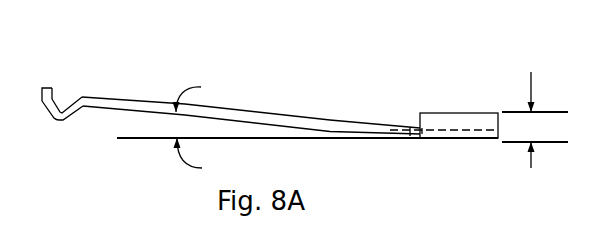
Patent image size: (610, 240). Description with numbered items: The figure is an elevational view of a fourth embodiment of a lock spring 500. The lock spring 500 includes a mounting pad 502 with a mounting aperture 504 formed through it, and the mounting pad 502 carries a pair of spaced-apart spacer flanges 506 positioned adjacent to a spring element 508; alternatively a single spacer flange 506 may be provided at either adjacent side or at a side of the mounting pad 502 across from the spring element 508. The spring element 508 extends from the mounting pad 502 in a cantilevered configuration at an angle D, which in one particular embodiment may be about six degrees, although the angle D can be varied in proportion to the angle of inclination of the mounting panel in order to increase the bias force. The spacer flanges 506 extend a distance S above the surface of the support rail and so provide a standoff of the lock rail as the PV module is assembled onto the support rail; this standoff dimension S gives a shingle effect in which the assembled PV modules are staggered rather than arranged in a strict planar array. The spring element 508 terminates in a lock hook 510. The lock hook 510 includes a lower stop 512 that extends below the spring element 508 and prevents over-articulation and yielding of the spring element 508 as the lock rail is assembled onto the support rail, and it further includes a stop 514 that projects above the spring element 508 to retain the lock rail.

The lock spring 500 is at (358, 80).
The mounting pad 502 is at (422, 132).
The mounting aperture 504 is at (432, 130).
The spacer flange 506 is at (463, 119).
The spring element 508 is at (250, 121).
The lock hook 510 is at (113, 70).
The lower stop 512 is at (58, 121).
The stop 514 is at (50, 88).
The angle D is at (199, 117).
The standoff dimension S is at (535, 107).